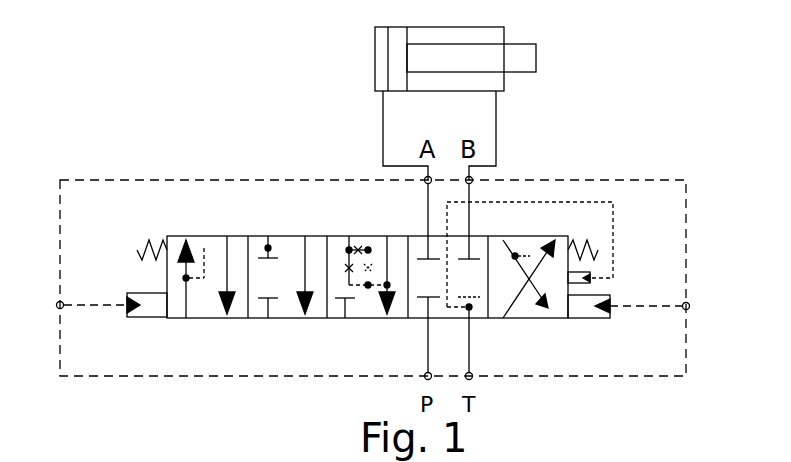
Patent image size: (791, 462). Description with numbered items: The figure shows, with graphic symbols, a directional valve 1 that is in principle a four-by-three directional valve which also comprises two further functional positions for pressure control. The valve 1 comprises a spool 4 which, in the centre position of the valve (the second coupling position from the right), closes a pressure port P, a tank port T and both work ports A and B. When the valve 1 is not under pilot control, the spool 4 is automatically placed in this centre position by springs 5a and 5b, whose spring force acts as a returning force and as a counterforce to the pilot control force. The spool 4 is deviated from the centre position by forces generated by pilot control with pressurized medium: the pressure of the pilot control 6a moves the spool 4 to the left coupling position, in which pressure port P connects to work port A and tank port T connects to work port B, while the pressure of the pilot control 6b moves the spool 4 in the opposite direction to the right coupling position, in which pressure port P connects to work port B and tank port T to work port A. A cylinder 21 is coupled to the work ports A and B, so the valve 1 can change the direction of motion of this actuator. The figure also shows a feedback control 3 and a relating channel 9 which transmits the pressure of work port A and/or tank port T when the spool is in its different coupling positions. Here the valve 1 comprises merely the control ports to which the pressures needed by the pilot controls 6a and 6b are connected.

The valve 1 is at (188, 180).
The cylinder 21 is at (350, 50).
The channel 9 is at (542, 200).
The spool 4 is at (195, 313).
The spring 5a is at (140, 240).
The spring 5b is at (598, 250).
The feedback control 3 is at (587, 280).
The pilot control 6a is at (127, 306).
The pilot control 6b is at (601, 317).